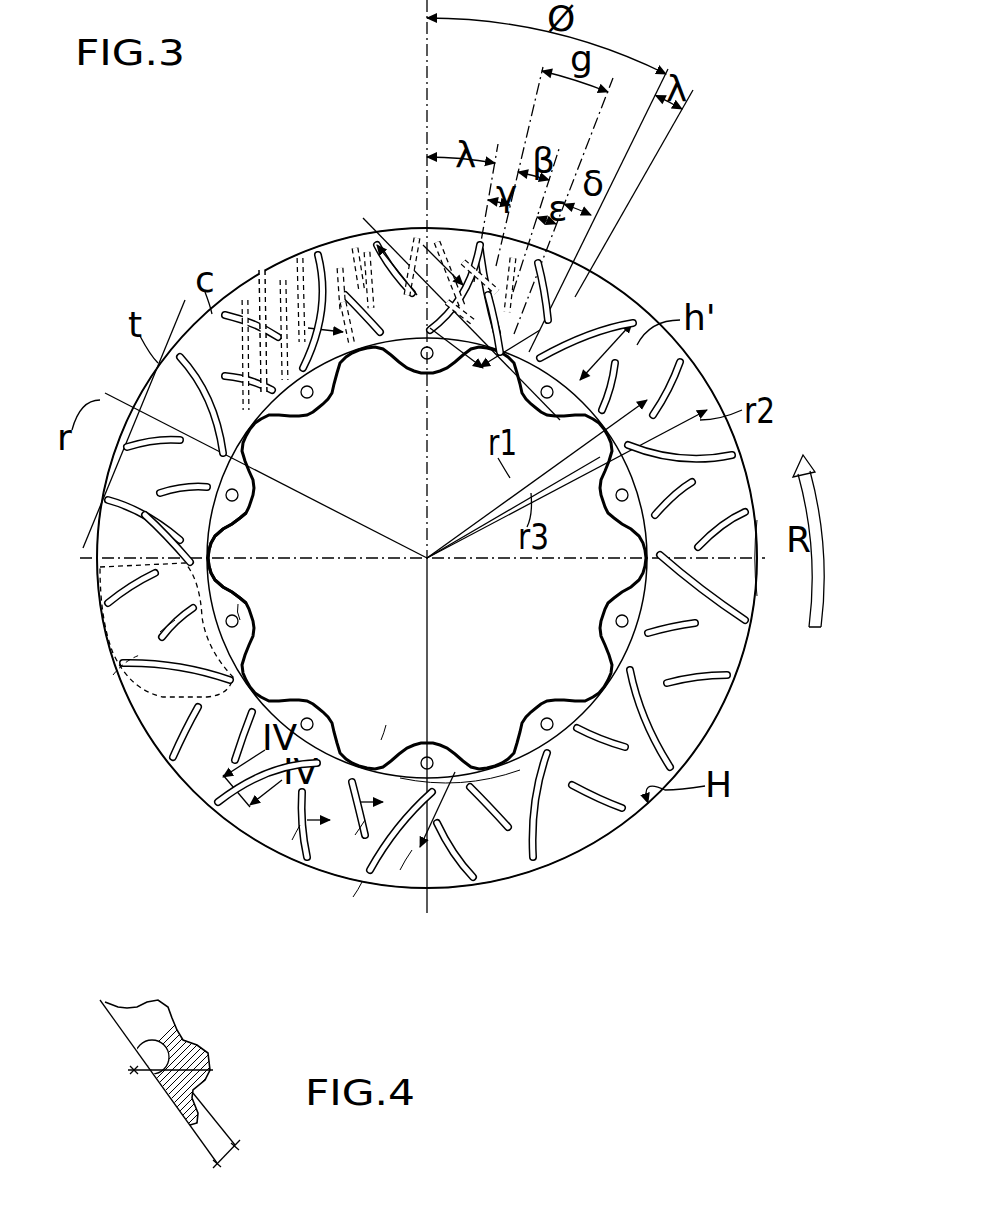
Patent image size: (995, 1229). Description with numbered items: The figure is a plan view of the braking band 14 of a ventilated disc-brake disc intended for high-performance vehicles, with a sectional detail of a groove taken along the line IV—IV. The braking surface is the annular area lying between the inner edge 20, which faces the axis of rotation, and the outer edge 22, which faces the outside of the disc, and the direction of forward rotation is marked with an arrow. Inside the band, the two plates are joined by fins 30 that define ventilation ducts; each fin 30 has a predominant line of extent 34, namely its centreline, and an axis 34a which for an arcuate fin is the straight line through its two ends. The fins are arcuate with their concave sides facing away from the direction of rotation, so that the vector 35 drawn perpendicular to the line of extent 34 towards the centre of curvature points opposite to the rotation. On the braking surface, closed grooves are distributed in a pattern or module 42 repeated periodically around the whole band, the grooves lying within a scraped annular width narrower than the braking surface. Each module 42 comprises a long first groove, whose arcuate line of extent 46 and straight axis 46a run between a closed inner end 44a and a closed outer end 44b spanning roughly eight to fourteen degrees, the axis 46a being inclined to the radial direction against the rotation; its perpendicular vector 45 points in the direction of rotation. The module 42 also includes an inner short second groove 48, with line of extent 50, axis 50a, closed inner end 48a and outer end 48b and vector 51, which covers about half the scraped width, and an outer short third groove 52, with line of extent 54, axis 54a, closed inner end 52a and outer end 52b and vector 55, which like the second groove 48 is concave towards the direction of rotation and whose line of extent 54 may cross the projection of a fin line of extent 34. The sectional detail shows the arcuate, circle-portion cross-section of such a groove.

The braking band 14 is at (675, 228).
The inner edge 20 is at (453, 773).
The outer edge 22 is at (752, 464).
The fin 30 is at (272, 268).
The predominant line of extent of the fin 34 is at (260, 275).
The axis of the fin 34a is at (318, 250).
The vector perpendicular to the fin line of extent 35 is at (338, 362).
The module 42 is at (135, 634).
The inner end of the first groove 44a is at (235, 676).
The outer end of the first groove 44b is at (118, 672).
The vector perpendicular to the first groove line of extent 45 is at (400, 870).
The predominant line of extent of the first groove 46 is at (381, 740).
The axis of the first groove 46a is at (353, 897).
The second groove 48 is at (200, 620).
The inner end of the second groove 48a is at (238, 604).
The outer end of the second groove 48b is at (160, 632).
The predominant line of extent of the second groove 50 is at (352, 900).
The axis of the second groove 50a is at (355, 835).
The vector perpendicular to the second groove line of extent 51 is at (425, 742).
The third groove 52 is at (150, 540).
The inner end of the third groove 52a is at (212, 562).
The outer end of the third groove 52b is at (108, 603).
The predominant line of extent of the third groove 54 is at (300, 828).
The axis of the third groove 54a is at (292, 840).
The vector perpendicular to the third groove line of extent 55 is at (350, 775).